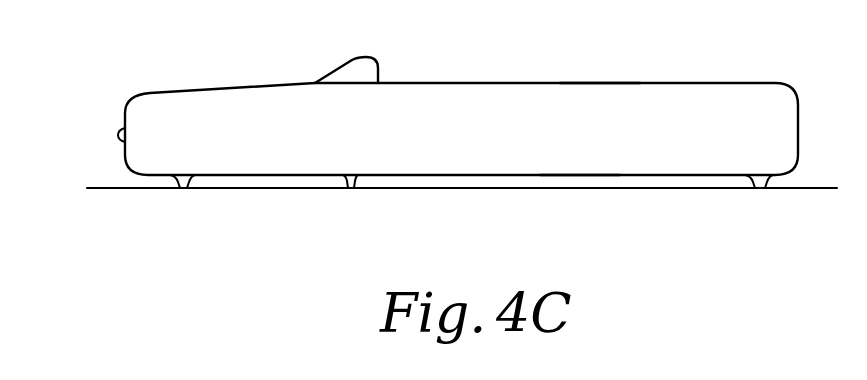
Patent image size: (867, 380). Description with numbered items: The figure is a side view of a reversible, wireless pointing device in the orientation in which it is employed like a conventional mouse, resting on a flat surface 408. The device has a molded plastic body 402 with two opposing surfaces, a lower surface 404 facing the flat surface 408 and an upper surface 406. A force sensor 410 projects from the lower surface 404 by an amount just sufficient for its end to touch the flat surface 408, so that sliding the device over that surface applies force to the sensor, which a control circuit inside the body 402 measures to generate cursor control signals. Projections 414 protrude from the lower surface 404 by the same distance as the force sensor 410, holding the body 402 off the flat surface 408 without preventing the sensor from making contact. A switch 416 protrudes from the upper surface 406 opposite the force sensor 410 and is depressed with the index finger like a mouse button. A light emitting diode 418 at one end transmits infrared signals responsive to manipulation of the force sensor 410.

The body 402 is at (717, 42).
The surface 404 is at (582, 175).
The surface 406 is at (595, 83).
The flat surface 408 is at (463, 189).
The force sensor 410 is at (352, 189).
The projections 414 is at (184, 189).
The switch 416 is at (352, 57).
The light emitting diode 418 is at (118, 137).